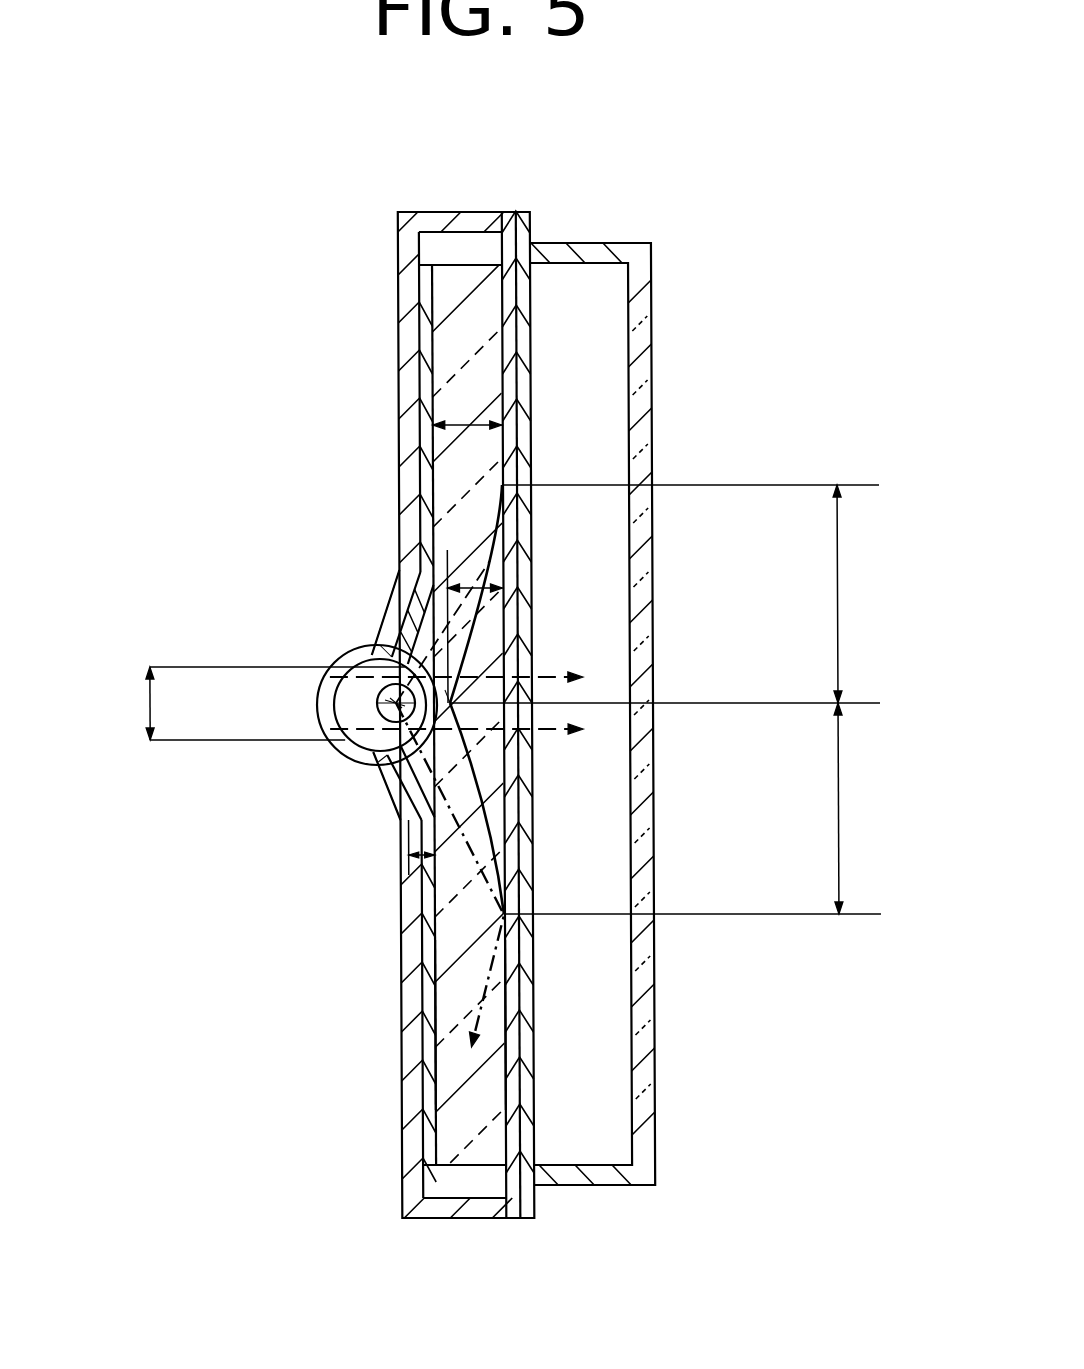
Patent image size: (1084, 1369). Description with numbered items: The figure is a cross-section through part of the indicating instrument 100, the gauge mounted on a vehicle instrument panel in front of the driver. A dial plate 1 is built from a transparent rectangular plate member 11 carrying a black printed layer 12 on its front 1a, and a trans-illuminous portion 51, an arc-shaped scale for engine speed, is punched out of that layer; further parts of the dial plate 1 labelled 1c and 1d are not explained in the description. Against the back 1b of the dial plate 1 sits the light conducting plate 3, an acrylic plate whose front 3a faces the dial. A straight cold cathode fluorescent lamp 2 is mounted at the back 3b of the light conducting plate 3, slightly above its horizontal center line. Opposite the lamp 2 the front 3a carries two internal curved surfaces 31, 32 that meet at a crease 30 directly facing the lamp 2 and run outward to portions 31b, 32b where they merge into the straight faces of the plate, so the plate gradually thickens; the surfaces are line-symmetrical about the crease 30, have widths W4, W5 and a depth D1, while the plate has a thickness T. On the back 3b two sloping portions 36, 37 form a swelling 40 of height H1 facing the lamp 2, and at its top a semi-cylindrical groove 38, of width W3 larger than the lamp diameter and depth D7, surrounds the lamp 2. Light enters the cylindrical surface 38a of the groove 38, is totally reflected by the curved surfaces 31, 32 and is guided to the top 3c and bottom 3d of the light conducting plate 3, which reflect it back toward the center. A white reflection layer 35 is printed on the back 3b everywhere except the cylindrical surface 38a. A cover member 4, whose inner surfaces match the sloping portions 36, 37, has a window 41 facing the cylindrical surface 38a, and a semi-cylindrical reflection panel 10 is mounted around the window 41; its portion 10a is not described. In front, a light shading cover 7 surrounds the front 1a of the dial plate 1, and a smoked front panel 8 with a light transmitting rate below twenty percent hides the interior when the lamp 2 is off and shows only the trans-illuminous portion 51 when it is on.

The dial plate 1 is at (536, 220).
The front of the dial plate 1a is at (522, 408).
The back of the dial plate 1b is at (500, 318).
The upper end wall of unit 1c is at (513, 212).
The lower end wall of unit 1d is at (522, 1218).
The cold cathode fluorescent lamp 2 is at (392, 710).
The light conducting plate 3 is at (447, 1126).
The front of the light conducting plate 3a is at (506, 1022).
The back of the light conducting plate 3b is at (434, 1022).
The top of the light conducting plate 3c is at (457, 263).
The bottom of the light conducting plate 3d is at (456, 1172).
The cover member 4 is at (405, 212).
The light shading cover 7 is at (612, 1185).
The smoked front panel 8 is at (641, 770).
The reflection panel 10 is at (332, 686).
The lens of light emitting diode 10a is at (388, 722).
The transparent rectangular plate member 11 is at (510, 286).
The black printed layer 12 is at (510, 345).
The crease 30 is at (455, 706).
The curved surface 31 is at (482, 617).
The portion 31b is at (508, 490).
The curved surface 32 is at (480, 795).
The portion 32b is at (505, 914).
The white reflection layer 35 is at (432, 965).
The sloping portion 36 is at (397, 638).
The sloping portion 37 is at (400, 778).
The semi-cylindrical groove 38 is at (350, 748).
The cylindrical surface 38a is at (346, 663).
The swelling 40 is at (384, 646).
The window 41 is at (374, 762).
The trans-illuminous portion 51 is at (536, 966).
The indicating instrument 100 is at (690, 246).
The thickness of the light conducting plate T is at (467, 407).
The depth of the curved surfaces D1 is at (475, 626).
The depth of the semi-cylindrical groove D7 is at (378, 700).
The width of the semi-cylindrical groove W3 is at (173, 703).
The width of curved surface 31 W4 is at (664, 594).
The width of curved surface 32 W5 is at (857, 808).
The height of the swelling H1 is at (407, 842).